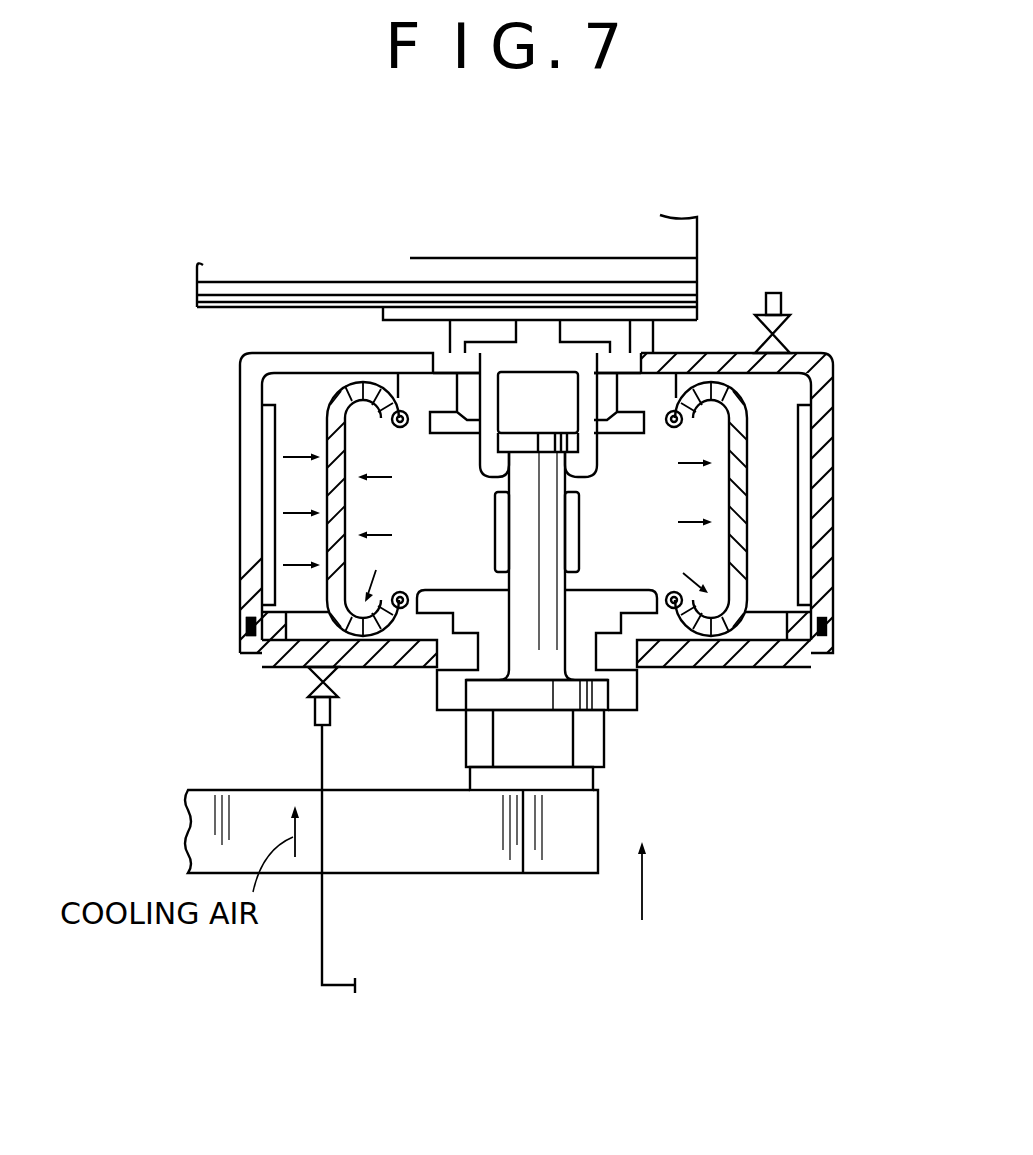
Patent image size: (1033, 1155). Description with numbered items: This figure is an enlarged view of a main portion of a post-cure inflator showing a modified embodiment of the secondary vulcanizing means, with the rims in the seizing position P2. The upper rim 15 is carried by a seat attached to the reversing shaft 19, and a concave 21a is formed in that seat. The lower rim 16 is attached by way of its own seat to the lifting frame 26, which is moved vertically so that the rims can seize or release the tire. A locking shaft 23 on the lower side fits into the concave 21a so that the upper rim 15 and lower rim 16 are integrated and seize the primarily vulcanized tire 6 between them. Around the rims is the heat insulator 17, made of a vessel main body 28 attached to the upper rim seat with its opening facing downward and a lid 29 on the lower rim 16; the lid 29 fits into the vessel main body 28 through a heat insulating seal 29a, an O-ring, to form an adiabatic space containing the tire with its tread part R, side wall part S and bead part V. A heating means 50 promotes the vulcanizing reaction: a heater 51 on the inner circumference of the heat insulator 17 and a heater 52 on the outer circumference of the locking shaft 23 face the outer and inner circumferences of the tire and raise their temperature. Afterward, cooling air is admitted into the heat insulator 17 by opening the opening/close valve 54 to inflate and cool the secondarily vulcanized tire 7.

The reversing shaft 19 is at (277, 282).
The concave 21a is at (497, 415).
The heat insulator 17 is at (576, 520).
The heating means 50 is at (250, 560).
The vessel main body 28 is at (815, 548).
The heater 51 is at (263, 511).
The primarily vulcanized tire 6 is at (250, 592).
The secondarily vulcanized tire 7 is at (251, 626).
The heat insulating seal 29a is at (828, 631).
The lid 29 is at (735, 655).
The side wall part S is at (375, 615).
The bead part V is at (405, 607).
The upper rim 15 is at (667, 410).
The heater 52 is at (495, 522).
The locking shaft 23 is at (520, 558).
The lower rim 16 is at (652, 612).
The lifting frame 26 is at (432, 855).
The opening/close valve 54 is at (790, 330).
The tread part R is at (327, 470).
The seizing position P2 is at (648, 538).